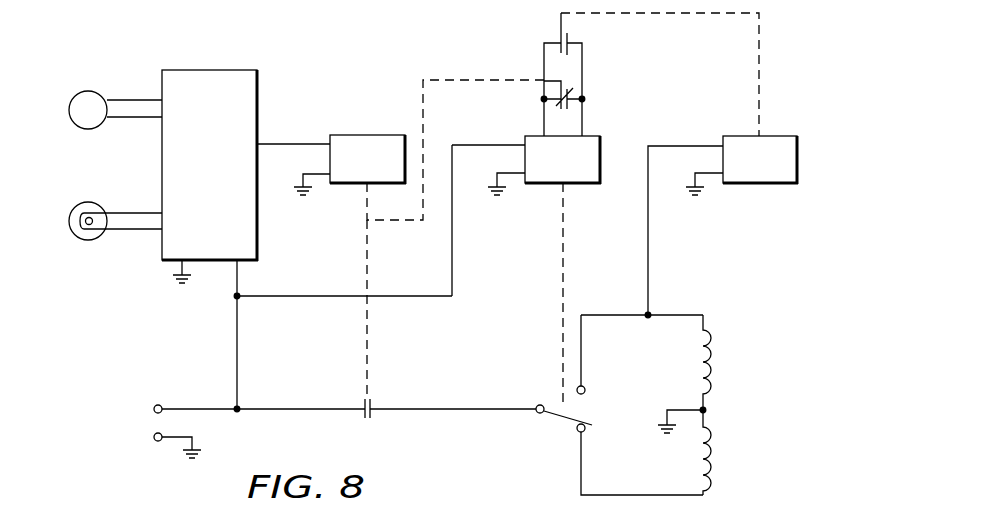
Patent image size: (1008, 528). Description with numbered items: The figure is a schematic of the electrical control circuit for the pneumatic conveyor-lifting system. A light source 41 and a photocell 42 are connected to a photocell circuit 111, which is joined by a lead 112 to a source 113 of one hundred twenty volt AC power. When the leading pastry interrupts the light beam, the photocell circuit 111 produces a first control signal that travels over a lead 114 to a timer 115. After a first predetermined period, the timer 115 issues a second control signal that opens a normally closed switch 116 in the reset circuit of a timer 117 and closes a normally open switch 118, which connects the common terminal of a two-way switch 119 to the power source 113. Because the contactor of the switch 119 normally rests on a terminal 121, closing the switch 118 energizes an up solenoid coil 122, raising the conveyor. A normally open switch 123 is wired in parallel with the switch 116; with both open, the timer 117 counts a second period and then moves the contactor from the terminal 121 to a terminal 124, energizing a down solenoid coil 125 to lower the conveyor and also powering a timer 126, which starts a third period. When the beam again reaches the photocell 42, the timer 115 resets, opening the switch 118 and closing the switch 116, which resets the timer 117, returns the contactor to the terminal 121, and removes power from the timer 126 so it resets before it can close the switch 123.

The light source 41 is at (93, 203).
The photocell 42 is at (97, 92).
The photocell circuit 111 is at (215, 70).
The lead 112 is at (236, 350).
The source of 120 V AC 113 is at (155, 404).
The lead 114 is at (279, 143).
The timer 115 is at (366, 134).
The normally closed switch 116 is at (572, 91).
The timer 117 is at (580, 185).
The normally open switch 118 is at (372, 413).
The two-way switch 119 is at (563, 433).
The terminal 121 is at (587, 431).
The up solenoid coil 122 is at (718, 438).
The normally open switch 123 is at (559, 39).
The terminal 124 is at (586, 387).
The down solenoid coil 125 is at (714, 338).
The timer 126 is at (757, 185).